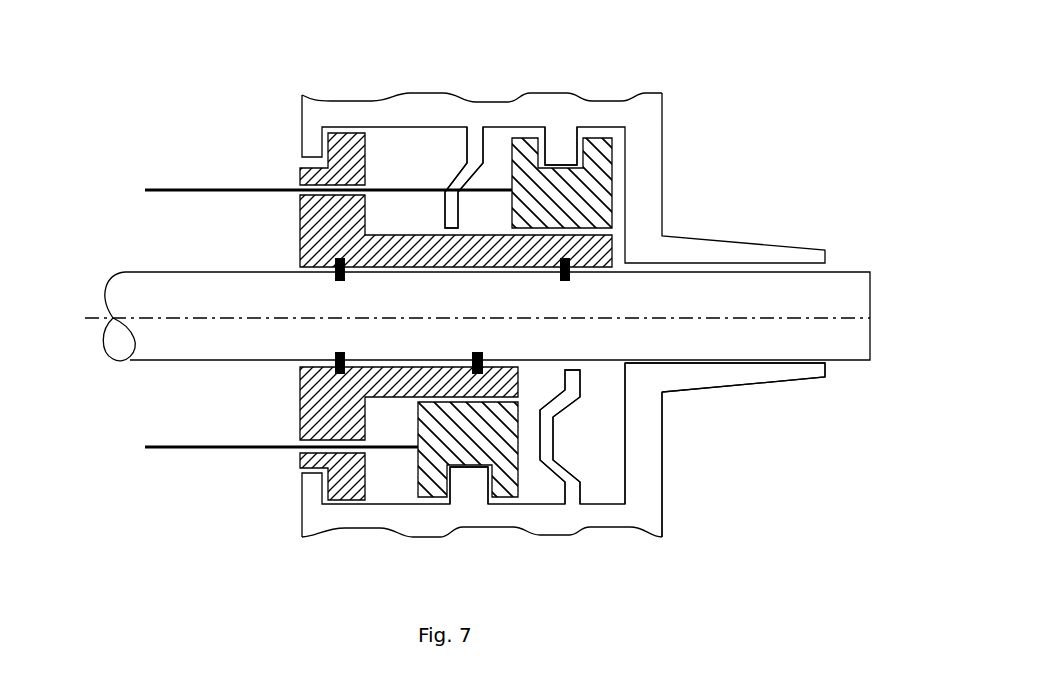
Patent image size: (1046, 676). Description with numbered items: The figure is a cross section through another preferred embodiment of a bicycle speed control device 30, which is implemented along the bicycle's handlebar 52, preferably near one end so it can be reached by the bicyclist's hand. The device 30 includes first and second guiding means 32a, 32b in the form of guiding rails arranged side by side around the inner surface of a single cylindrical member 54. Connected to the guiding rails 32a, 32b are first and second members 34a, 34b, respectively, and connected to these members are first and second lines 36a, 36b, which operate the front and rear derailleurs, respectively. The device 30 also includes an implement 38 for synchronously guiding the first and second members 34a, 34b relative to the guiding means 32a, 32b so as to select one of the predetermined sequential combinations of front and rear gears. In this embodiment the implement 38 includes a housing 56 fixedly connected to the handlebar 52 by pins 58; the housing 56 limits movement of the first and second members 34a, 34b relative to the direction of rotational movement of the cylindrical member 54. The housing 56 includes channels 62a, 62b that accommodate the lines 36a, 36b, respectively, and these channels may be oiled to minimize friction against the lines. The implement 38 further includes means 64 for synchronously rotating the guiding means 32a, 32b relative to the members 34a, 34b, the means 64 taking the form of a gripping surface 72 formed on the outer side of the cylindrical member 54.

The speed control device 30 is at (748, 112).
The first guiding means 32a is at (568, 128).
The second guiding means 32b is at (464, 142).
The first member 34a is at (592, 198).
The second member 34b is at (428, 457).
The first line 36a is at (200, 188).
The second line 36b is at (176, 448).
The implement 38 is at (288, 531).
The handlebar 52 is at (830, 298).
The cylindrical member 54 is at (652, 487).
The housing 56 is at (300, 233).
The pins 58 is at (563, 279).
The channel 62a is at (282, 200).
The channel 62b is at (280, 470).
The means for synchronously rotating 64 is at (694, 415).
The gripping surface 72 is at (363, 88).